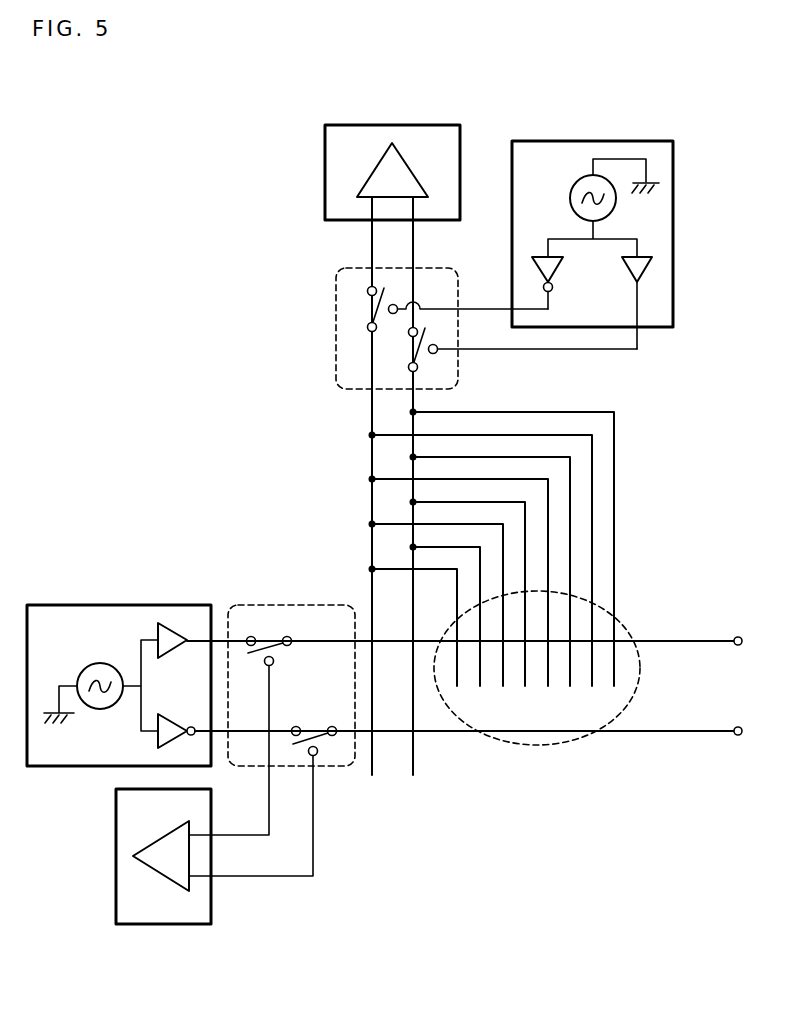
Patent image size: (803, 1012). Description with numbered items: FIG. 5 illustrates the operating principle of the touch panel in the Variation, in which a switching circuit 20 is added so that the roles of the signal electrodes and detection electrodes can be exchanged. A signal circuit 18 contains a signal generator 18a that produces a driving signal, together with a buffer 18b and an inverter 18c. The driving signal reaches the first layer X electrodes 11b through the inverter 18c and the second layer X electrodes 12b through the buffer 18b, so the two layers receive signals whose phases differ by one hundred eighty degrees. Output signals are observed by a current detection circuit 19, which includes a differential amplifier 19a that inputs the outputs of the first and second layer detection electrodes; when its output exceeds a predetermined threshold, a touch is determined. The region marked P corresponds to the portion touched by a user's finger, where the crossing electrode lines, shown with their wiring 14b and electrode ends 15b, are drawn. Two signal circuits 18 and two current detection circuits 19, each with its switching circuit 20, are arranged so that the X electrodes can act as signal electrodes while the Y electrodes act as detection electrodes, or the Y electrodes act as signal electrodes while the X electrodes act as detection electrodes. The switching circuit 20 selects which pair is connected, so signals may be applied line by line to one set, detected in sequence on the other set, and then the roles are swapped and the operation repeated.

The current detection circuit 19 is at (397, 125).
The differential amplifier 19a is at (376, 166).
The signal circuit 18 is at (612, 141).
The signal generator 18a is at (574, 177).
The buffer 18b is at (652, 270).
The inverter 18c is at (534, 267).
The switching circuit 20 is at (336, 300).
The signal lines / wiring 14b is at (480, 568).
The electrode ends 15b is at (592, 686).
The touched portion P is at (632, 628).
The second layer X electrodes 12b is at (675, 638).
The first layer X electrodes 11b is at (675, 735).